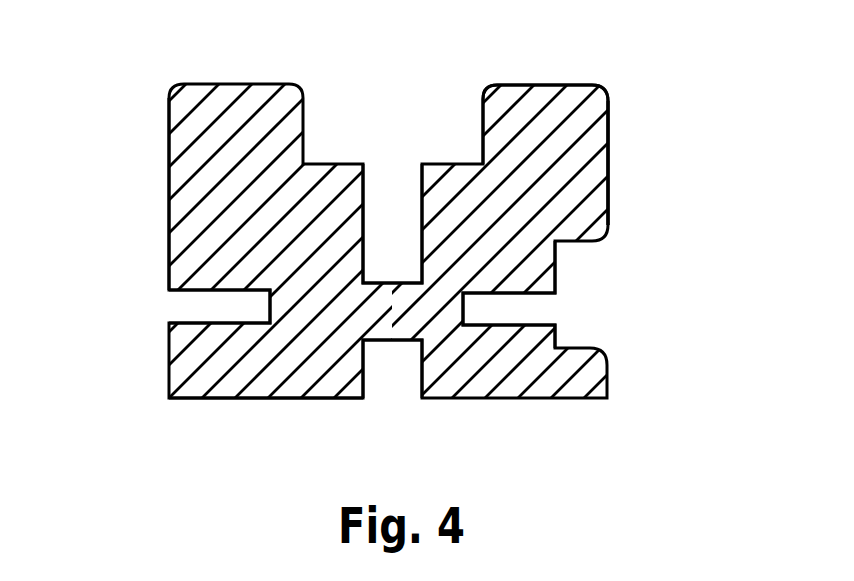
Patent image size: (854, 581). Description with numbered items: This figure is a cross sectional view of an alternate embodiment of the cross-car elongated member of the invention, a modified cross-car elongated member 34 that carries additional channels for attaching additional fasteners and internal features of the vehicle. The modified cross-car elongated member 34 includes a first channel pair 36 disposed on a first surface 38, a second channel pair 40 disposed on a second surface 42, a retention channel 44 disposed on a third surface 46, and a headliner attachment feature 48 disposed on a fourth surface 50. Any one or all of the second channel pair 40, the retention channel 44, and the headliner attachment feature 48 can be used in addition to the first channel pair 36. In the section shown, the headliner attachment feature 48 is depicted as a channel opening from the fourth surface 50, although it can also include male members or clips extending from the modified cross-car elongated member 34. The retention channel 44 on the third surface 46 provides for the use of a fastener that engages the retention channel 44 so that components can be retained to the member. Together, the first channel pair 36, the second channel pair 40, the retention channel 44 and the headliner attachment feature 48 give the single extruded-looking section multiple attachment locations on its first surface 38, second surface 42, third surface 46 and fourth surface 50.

The modified cross-car elongated member 34 is at (150, 67).
The first channel pair 36 is at (320, 84).
The first surface 38 is at (552, 82).
The second channel pair 40 is at (570, 264).
The second surface 42 is at (610, 160).
The retention channel 44 is at (179, 306).
The third surface 46 is at (168, 212).
The headliner attachment feature 48 is at (413, 381).
The fourth surface 50 is at (247, 397).